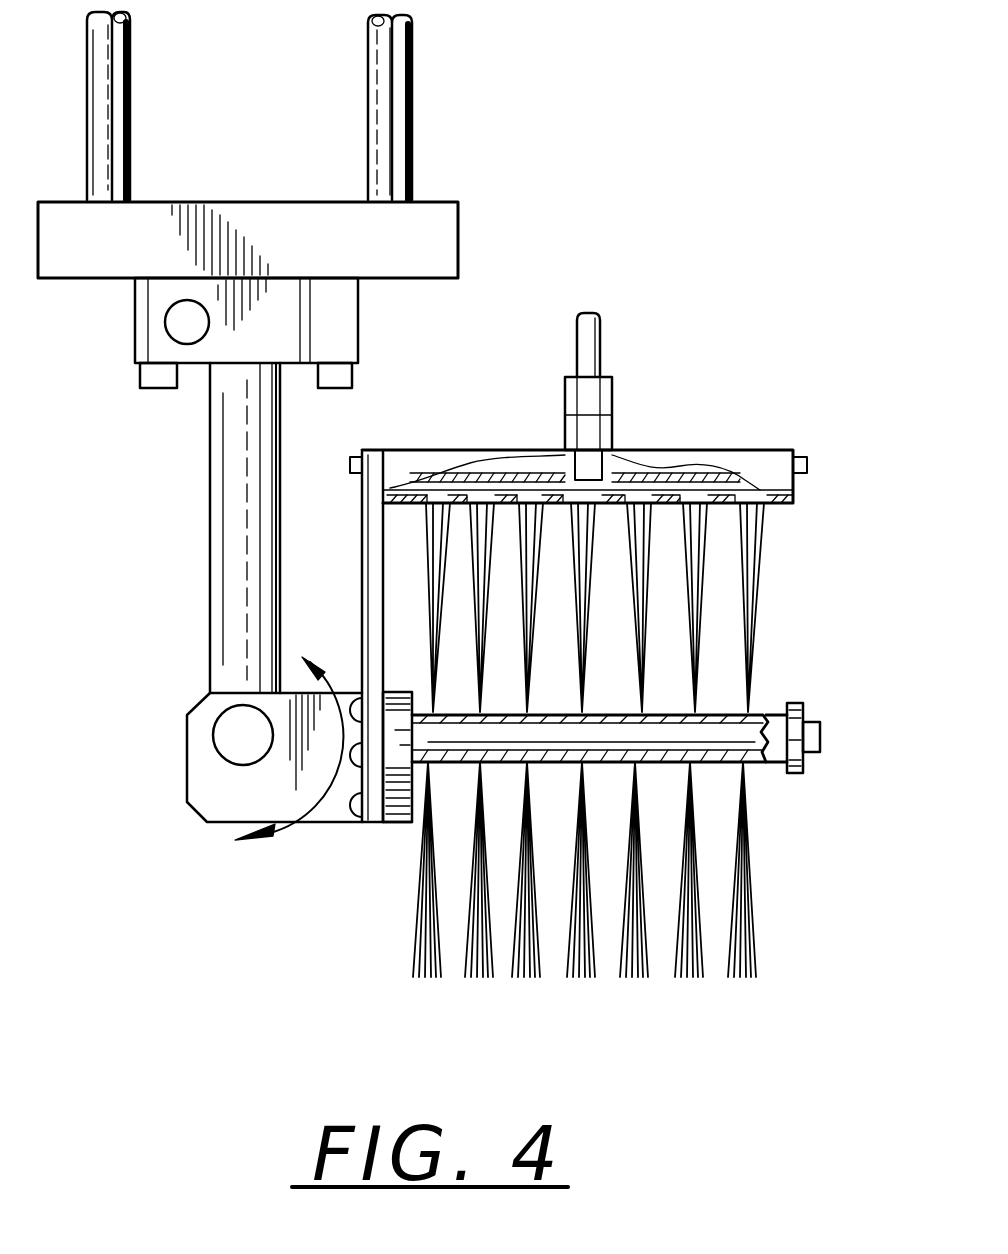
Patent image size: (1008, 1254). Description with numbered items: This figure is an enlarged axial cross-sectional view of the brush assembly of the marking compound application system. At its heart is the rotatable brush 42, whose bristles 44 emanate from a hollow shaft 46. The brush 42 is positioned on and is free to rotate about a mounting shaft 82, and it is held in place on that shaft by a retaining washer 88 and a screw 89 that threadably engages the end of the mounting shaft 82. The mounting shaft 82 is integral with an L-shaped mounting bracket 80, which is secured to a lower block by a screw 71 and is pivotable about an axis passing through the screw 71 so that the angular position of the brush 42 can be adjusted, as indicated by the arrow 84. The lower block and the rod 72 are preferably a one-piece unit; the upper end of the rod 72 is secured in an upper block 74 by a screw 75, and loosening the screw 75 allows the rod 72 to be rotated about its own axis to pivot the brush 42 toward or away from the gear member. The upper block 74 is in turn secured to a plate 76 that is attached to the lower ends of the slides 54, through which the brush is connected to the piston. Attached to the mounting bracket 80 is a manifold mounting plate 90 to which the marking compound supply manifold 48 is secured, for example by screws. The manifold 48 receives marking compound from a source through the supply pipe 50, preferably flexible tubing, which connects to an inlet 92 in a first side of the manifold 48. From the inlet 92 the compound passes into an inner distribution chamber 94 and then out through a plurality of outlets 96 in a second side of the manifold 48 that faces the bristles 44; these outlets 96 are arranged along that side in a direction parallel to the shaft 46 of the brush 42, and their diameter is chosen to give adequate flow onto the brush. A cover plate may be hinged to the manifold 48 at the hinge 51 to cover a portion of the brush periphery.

The rotatable brush 42 is at (600, 672).
The bristles 44 is at (737, 983).
The hollow shaft 46 is at (715, 762).
The marking compound supply manifold 48 is at (600, 436).
The supply pipe 50 is at (600, 332).
The hinge 51 is at (350, 462).
The slides 54 is at (130, 80).
The screw 71 is at (238, 748).
The rod 72 is at (210, 488).
The upper block 74 is at (358, 323).
The screw 75 is at (183, 322).
The plate 76 is at (458, 234).
The L-shaped mounting bracket 80 is at (197, 717).
The mounting shaft 82 is at (722, 732).
The arrow 84 is at (338, 822).
The retaining washer 88 is at (795, 705).
The screw 89 is at (820, 735).
The manifold mounting plate 90 is at (373, 803).
The inlet 92 is at (590, 462).
The inner distribution chamber 94 is at (432, 492).
The outlets 96 is at (648, 500).